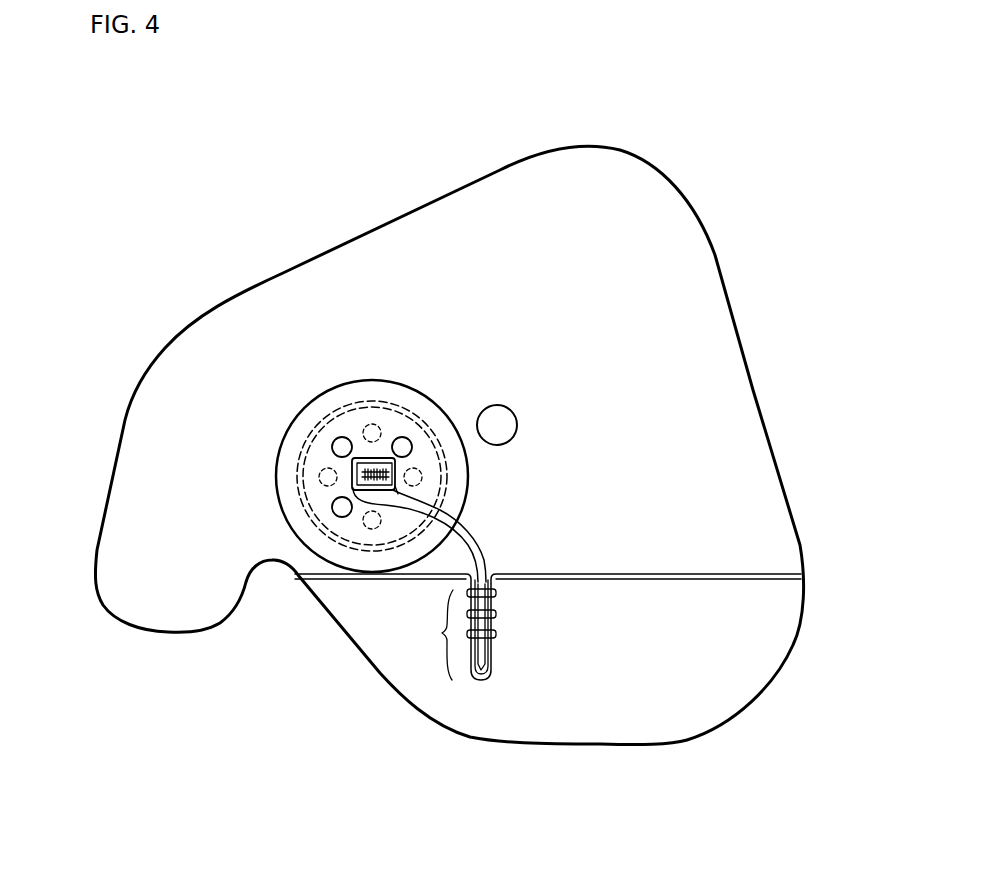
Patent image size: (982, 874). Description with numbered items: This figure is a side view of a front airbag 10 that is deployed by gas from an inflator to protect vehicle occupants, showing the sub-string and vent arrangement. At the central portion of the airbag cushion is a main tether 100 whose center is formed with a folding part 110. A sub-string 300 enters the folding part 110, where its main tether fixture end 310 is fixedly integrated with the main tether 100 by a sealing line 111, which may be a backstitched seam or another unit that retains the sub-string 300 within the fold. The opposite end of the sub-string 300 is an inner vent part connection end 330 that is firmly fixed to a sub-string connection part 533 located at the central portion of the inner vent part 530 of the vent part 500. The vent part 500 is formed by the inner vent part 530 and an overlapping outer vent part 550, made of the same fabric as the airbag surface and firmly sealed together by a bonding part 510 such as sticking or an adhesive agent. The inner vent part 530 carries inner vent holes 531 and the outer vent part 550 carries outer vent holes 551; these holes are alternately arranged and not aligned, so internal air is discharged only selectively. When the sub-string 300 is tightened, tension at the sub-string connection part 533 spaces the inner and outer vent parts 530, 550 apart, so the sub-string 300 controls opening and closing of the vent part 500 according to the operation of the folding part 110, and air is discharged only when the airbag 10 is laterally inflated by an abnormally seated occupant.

The front airbag 10 is at (667, 170).
The main tether 100 is at (737, 586).
The folding part 110 is at (444, 634).
The sealing line 111 is at (497, 595).
The sub-string 300 is at (487, 545).
The main tether fixture end 310 is at (483, 683).
The inner vent part connection end 330 is at (400, 471).
The vent part 500 is at (349, 379).
The bonding part 510 is at (322, 420).
The inner vent part 530 is at (347, 527).
The inner vent holes 531 is at (332, 447).
The sub-string connection part 533 is at (380, 459).
The outer vent part 550 is at (325, 525).
The outer vent holes 551 is at (318, 480).